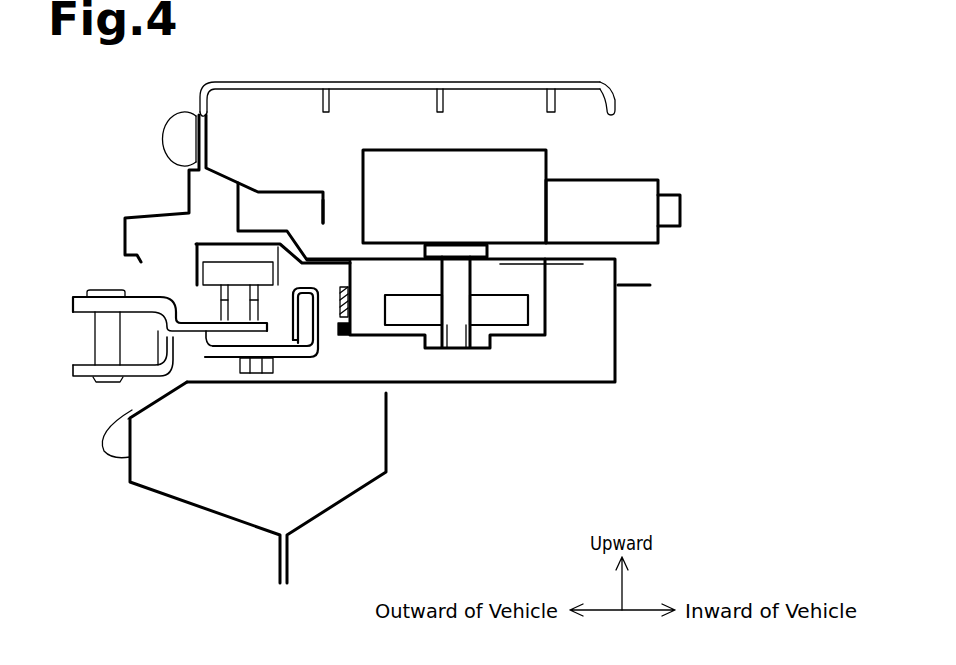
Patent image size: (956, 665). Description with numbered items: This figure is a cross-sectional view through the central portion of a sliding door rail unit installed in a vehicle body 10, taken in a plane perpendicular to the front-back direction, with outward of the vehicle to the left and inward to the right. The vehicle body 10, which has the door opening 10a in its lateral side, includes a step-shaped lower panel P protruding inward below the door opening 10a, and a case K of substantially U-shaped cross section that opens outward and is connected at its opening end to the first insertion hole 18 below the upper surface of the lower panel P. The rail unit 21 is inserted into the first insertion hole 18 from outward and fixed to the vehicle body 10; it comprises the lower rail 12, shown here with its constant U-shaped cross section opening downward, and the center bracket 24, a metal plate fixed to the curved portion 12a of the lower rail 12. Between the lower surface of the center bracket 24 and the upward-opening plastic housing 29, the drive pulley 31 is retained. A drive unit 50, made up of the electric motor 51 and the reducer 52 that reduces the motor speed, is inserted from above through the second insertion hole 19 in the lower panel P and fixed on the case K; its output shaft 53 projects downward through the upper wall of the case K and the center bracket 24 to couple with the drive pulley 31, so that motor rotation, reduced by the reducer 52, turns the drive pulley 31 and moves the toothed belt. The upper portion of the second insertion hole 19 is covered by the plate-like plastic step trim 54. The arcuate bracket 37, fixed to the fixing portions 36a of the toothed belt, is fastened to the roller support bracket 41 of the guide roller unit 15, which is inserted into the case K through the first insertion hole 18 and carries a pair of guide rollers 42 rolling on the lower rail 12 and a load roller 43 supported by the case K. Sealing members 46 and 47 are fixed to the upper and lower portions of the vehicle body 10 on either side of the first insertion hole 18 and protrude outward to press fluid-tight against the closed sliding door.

The vehicle body 10 is at (137, 216).
The door opening 10a is at (199, 111).
The lower rail 12 is at (197, 264).
The curved portion 12a is at (106, 293).
The guide roller unit 15 is at (74, 372).
The first insertion hole 18 is at (148, 403).
The second insertion hole 19 is at (327, 204).
The rail unit 21 is at (472, 356).
The center bracket 24 is at (215, 243).
The housing 29 is at (549, 319).
The drive pulley 31 is at (384, 325).
The fixing portion 36a is at (316, 350).
The bracket 37 is at (82, 313).
The roller support bracket 41 is at (74, 297).
The guide roller 42 is at (213, 265).
The load roller 43 is at (222, 360).
The sealing member 46 is at (154, 130).
The sealing member 47 is at (108, 451).
The drive unit 50 is at (498, 141).
The electric motor 51 is at (607, 188).
The reducer 52 is at (466, 151).
The output shaft 53 is at (477, 279).
The step trim 54 is at (414, 82).
The case K is at (618, 340).
The lower panel P is at (284, 192).